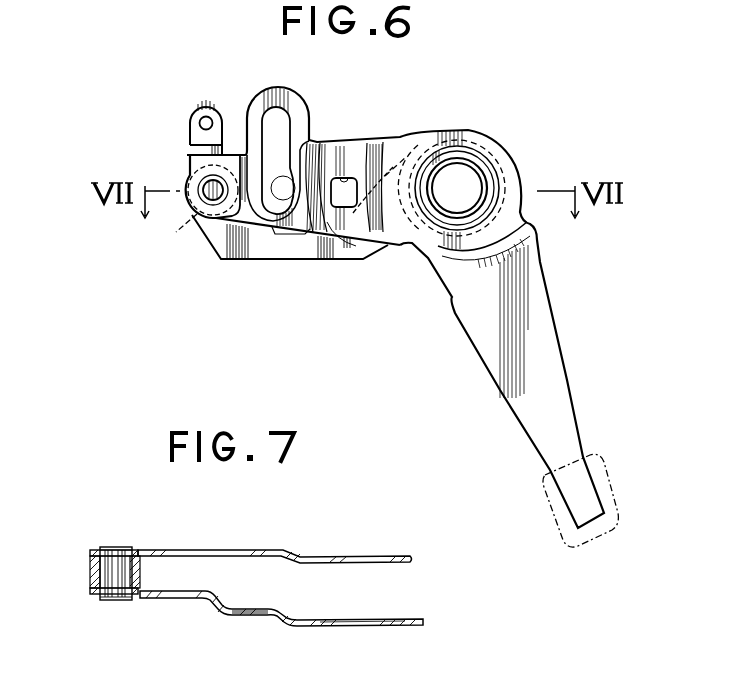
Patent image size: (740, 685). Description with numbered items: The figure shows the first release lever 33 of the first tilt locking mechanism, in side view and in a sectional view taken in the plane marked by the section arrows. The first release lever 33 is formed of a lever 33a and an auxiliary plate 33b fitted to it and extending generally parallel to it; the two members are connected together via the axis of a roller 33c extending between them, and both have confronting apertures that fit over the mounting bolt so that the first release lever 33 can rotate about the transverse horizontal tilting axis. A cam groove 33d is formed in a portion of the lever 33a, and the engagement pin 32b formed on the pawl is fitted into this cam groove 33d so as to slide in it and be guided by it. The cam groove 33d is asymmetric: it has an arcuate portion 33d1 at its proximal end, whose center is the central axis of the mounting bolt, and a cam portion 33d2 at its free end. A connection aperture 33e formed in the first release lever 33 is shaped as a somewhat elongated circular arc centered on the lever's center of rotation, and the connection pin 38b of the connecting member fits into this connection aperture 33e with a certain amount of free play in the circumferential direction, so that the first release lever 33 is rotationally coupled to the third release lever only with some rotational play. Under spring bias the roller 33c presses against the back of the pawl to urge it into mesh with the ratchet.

In FIG. 6, the first release lever 33 is at (410, 246).
In FIG. 7, the first release lever 33 is at (86, 575).
In FIG. 6, the lever 33a is at (553, 358).
In FIG. 7, the lever 33a is at (394, 628).
In FIG. 6, the auxiliary plate 33b is at (258, 256).
In FIG. 7, the auxiliary plate 33b is at (302, 555).
In FIG. 6, the roller 33c is at (205, 208).
In FIG. 7, the roller 33c is at (142, 579).
In FIG. 6, the cam groove 33d is at (270, 118).
In FIG. 7, the cam groove 33d is at (197, 601).
In FIG. 6, the arcuate portion 33d1 is at (302, 252).
In FIG. 6, the cam portion 33d2 is at (291, 118).
In FIG. 6, the connection aperture 33e is at (357, 175).
In FIG. 7, the connection aperture 33e is at (258, 622).
In FIG. 6, the connection pin 38b is at (356, 246).
In FIG. 6, the engagement pin 32b is at (196, 250).